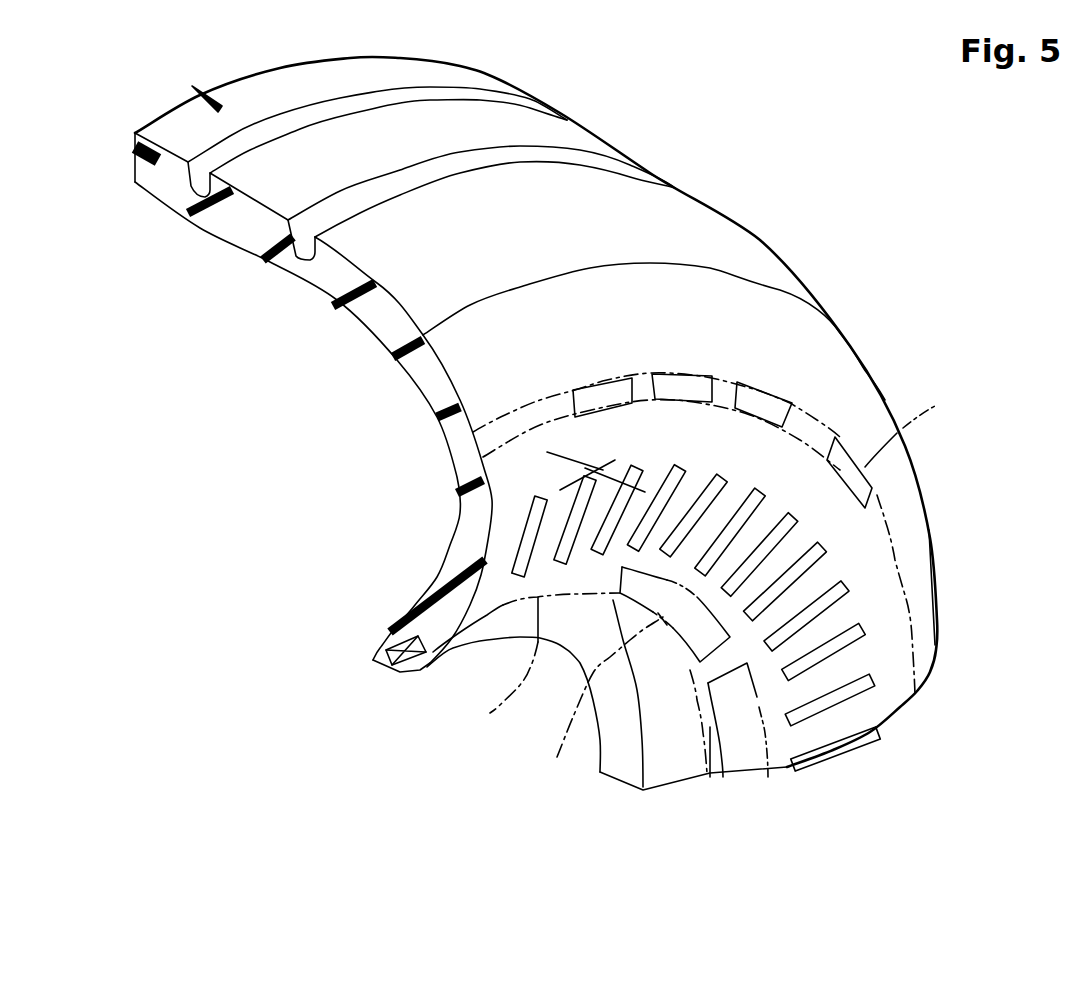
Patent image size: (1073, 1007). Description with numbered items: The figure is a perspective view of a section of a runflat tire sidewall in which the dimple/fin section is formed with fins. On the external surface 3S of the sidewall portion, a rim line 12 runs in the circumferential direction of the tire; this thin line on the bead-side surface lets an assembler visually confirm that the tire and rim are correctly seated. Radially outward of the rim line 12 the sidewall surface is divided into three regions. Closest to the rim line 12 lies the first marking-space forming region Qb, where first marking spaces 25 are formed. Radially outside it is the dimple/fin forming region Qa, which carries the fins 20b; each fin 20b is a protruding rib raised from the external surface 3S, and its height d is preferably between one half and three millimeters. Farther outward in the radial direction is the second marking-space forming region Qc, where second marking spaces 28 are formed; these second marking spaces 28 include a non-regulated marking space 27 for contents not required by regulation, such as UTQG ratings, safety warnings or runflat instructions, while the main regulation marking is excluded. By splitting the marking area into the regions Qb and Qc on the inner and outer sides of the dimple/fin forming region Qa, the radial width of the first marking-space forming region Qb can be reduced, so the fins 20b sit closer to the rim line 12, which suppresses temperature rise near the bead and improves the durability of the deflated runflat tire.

The external surface of sidewall portion 3S is at (510, 533).
The rim line 12 is at (490, 713).
The first marking space 25 is at (600, 705).
The non-regulated marking space 27 is at (935, 406).
The second marking space 28 is at (900, 547).
The fin 20b is at (843, 698).
The height of fin d is at (583, 467).
The dimple/fin forming region Qa is at (883, 750).
The first marking-space forming region Qb is at (772, 778).
The second marking-space forming region Qc is at (934, 692).